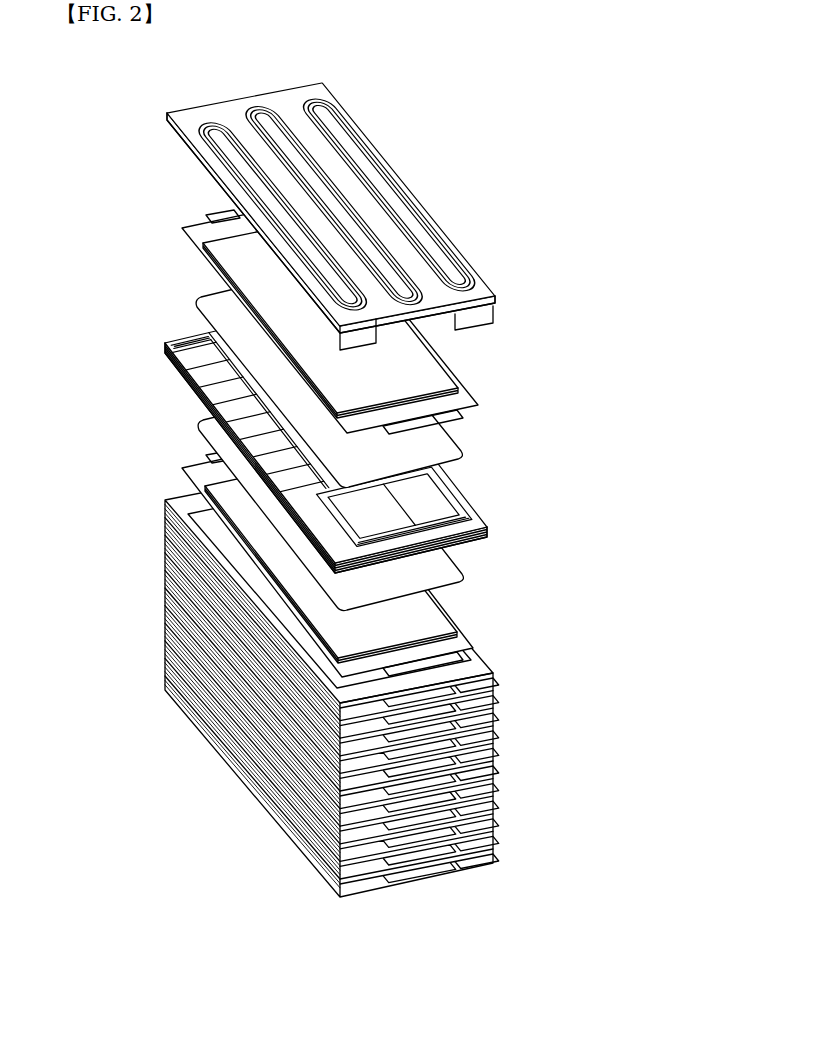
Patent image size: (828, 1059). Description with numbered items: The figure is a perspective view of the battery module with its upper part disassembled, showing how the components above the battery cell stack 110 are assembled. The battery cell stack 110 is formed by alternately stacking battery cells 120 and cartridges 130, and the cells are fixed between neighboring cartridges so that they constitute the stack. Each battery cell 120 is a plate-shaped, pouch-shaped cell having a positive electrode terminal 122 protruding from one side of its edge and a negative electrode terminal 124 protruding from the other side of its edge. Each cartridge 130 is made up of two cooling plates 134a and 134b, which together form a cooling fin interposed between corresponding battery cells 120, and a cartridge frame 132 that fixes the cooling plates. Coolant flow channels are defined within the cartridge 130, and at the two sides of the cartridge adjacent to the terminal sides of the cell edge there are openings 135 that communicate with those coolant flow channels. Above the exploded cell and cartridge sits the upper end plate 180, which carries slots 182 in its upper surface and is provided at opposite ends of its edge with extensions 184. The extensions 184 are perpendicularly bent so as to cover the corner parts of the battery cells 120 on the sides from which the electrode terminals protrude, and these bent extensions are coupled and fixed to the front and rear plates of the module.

The battery cell stack 110 is at (160, 641).
The battery cell 120 is at (375, 415).
The positive electrode terminal 122 is at (443, 423).
The negative electrode terminal 124 is at (222, 210).
The cartridge 130 is at (375, 441).
The cartridge frame 132 is at (377, 440).
The cooling plate 134a is at (462, 457).
The cooling plate 134b is at (460, 568).
The opening 135 is at (247, 415).
The upper end plate 180 is at (387, 216).
The slot 182 is at (370, 180).
The extension 184 is at (483, 318).